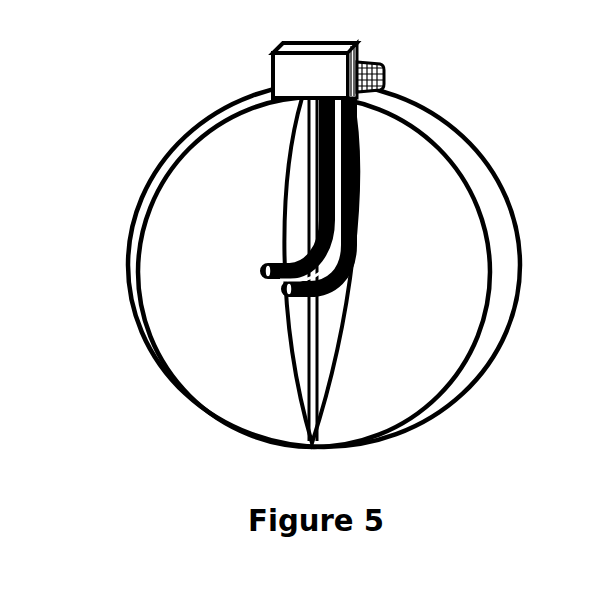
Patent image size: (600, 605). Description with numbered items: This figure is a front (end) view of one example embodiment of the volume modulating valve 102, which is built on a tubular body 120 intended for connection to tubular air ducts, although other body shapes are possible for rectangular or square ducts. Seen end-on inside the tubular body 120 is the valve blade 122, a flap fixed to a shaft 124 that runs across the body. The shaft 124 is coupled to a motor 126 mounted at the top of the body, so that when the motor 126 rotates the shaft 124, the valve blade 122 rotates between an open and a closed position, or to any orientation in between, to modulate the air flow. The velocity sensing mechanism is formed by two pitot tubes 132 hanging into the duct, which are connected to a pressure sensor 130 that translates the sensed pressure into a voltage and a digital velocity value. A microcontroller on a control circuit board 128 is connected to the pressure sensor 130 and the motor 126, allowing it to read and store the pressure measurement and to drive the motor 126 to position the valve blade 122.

The volume modulating valve 102 is at (118, 141).
The tubular body 120 is at (137, 318).
The valve blade 122 is at (292, 378).
The shaft 124 is at (323, 423).
The motor 126 is at (285, 72).
The control circuit board 128 is at (357, 47).
The pressure sensor 130 is at (383, 67).
The pitot tubes 132 is at (360, 162).